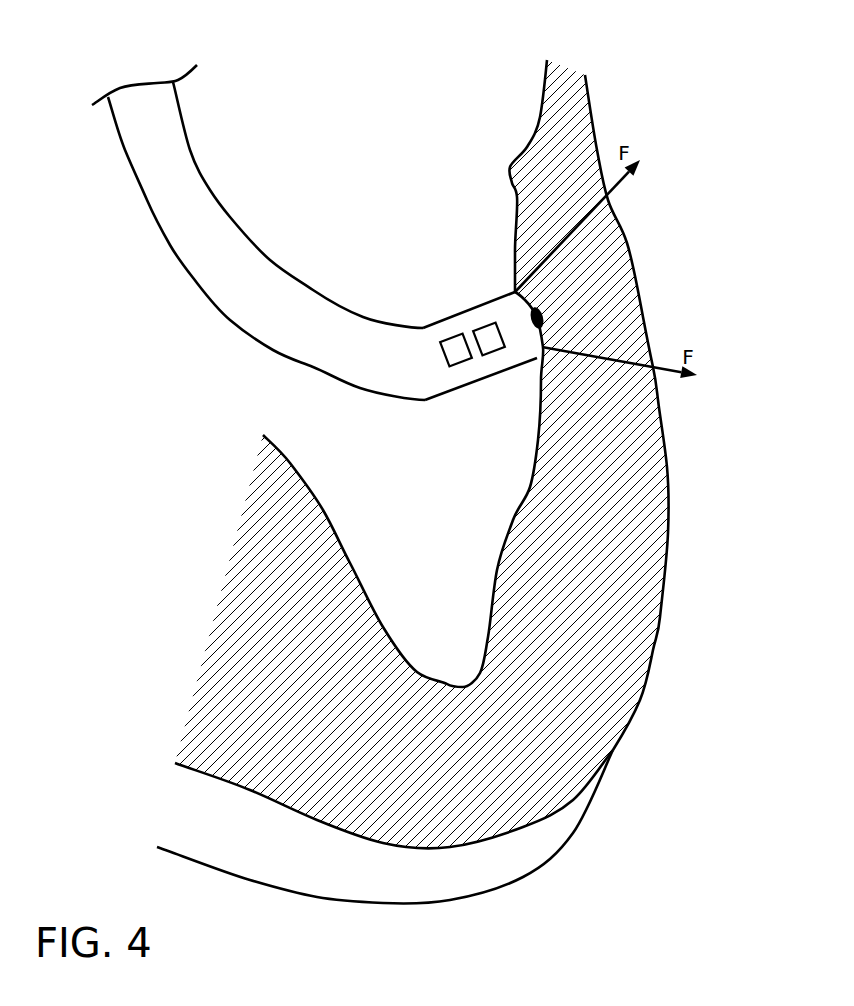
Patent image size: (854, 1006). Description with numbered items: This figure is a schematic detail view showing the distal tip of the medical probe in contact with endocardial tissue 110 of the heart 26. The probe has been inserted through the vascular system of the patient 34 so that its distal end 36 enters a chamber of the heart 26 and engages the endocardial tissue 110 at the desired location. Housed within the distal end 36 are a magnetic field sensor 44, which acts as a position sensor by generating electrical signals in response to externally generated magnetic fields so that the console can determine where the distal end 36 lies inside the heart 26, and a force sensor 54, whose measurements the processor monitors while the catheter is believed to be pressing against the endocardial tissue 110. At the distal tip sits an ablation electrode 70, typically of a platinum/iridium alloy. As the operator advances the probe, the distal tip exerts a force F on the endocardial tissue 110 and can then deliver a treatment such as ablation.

The patient 34 is at (127, 294).
The distal end 36 is at (480, 361).
The magnetic field sensor 44 is at (442, 340).
The force sensor 54 is at (480, 328).
The heart 26 is at (427, 500).
The endocardial tissue 110 is at (523, 150).
The ablation electrode 70 is at (543, 317).